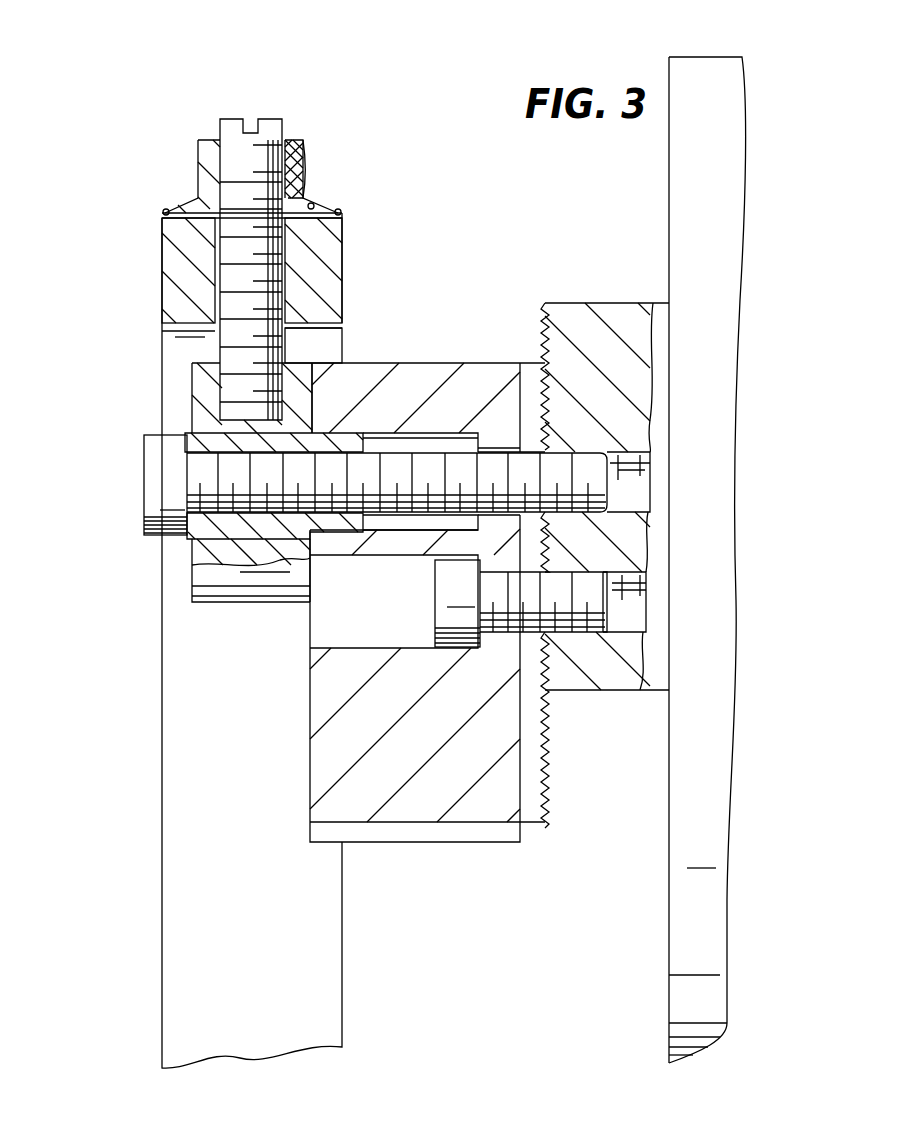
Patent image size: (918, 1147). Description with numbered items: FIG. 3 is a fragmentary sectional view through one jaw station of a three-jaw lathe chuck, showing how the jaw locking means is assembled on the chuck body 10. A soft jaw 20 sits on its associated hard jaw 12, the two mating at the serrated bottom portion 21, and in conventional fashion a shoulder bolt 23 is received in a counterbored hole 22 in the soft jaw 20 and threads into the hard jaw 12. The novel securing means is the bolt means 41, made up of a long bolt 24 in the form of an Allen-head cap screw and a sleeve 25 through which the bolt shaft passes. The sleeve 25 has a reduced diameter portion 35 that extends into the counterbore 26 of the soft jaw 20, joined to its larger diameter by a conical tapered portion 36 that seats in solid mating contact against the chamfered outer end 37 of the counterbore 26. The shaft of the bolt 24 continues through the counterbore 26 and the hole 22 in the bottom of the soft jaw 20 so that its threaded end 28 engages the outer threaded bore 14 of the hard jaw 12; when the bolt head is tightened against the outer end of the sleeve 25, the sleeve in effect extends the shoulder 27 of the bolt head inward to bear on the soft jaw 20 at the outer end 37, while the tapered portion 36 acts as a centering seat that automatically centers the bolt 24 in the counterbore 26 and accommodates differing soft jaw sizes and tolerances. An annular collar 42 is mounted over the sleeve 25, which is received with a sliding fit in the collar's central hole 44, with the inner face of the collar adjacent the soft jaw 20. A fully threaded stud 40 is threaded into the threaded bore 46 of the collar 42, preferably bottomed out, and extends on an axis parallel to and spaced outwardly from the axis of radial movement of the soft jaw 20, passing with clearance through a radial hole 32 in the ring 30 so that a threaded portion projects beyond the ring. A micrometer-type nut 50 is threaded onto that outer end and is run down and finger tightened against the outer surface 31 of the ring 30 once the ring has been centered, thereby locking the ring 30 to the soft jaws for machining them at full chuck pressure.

The chuck body 10 is at (742, 62).
The hard jaw 12 is at (624, 310).
The outer threaded bore 14 is at (653, 465).
The soft jaw 20 is at (468, 340).
The serrated bottom portion 21 is at (545, 668).
The counterbored hole 22 is at (492, 455).
The shoulder bolt 23 is at (445, 615).
The long bolt 24 is at (150, 480).
The sleeve 25 is at (197, 532).
The counterbore 26 is at (392, 437).
The shoulder 27 is at (192, 433).
The threaded end 28 is at (592, 512).
The ring 30 is at (328, 270).
The outer surface 31 is at (187, 212).
The radial hole 32 is at (288, 252).
The reduced diameter portion 35 is at (333, 437).
The conical tapered portion 36 is at (317, 537).
The chamfered outer end 37 is at (305, 430).
The stud 40 is at (283, 123).
The bolt means 41 is at (122, 459).
The annular collar 42 is at (197, 385).
The central hole 44 is at (247, 555).
The threaded bore 46 is at (228, 372).
The micrometer-type nut 50 is at (300, 175).